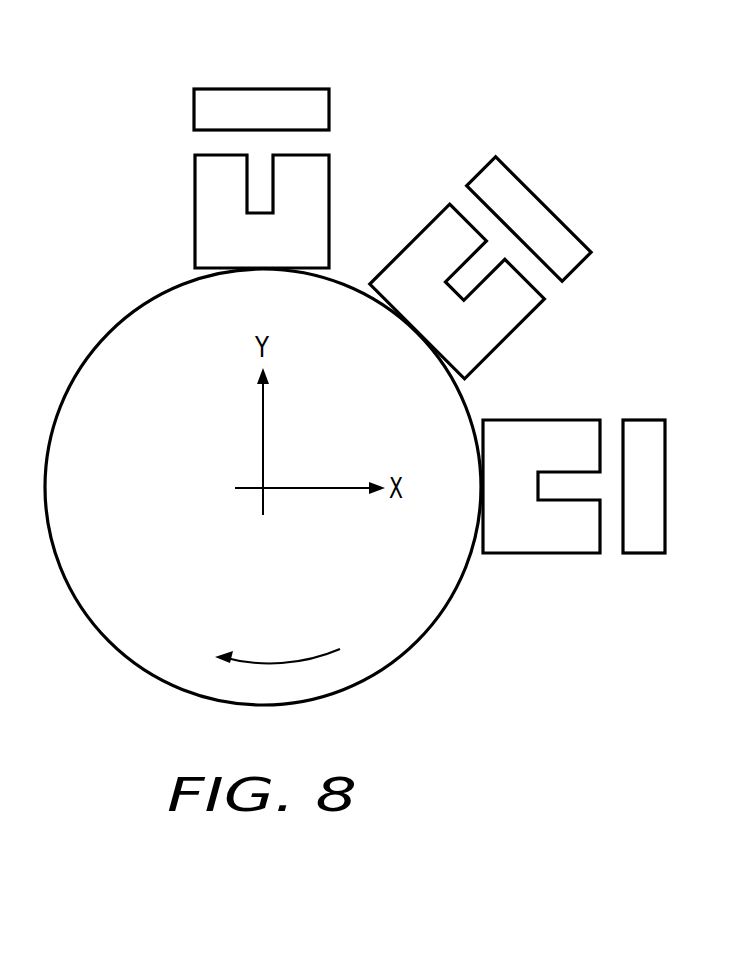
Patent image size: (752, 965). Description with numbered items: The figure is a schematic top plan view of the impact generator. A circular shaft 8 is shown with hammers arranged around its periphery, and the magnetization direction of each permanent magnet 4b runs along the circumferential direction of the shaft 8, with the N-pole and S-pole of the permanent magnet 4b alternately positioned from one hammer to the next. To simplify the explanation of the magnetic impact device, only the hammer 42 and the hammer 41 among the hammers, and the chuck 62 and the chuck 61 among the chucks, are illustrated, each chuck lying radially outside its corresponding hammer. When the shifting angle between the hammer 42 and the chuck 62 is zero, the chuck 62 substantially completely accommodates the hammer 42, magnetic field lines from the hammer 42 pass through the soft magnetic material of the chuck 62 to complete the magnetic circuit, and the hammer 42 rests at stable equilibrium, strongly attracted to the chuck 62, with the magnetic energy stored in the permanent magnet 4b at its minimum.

The shaft 8 is at (113, 622).
The hammer 42 is at (203, 225).
The chuck 62 is at (259, 98).
The hammer 41 is at (495, 333).
The chuck 61 is at (540, 213).
The permanent magnet 4b is at (535, 540).